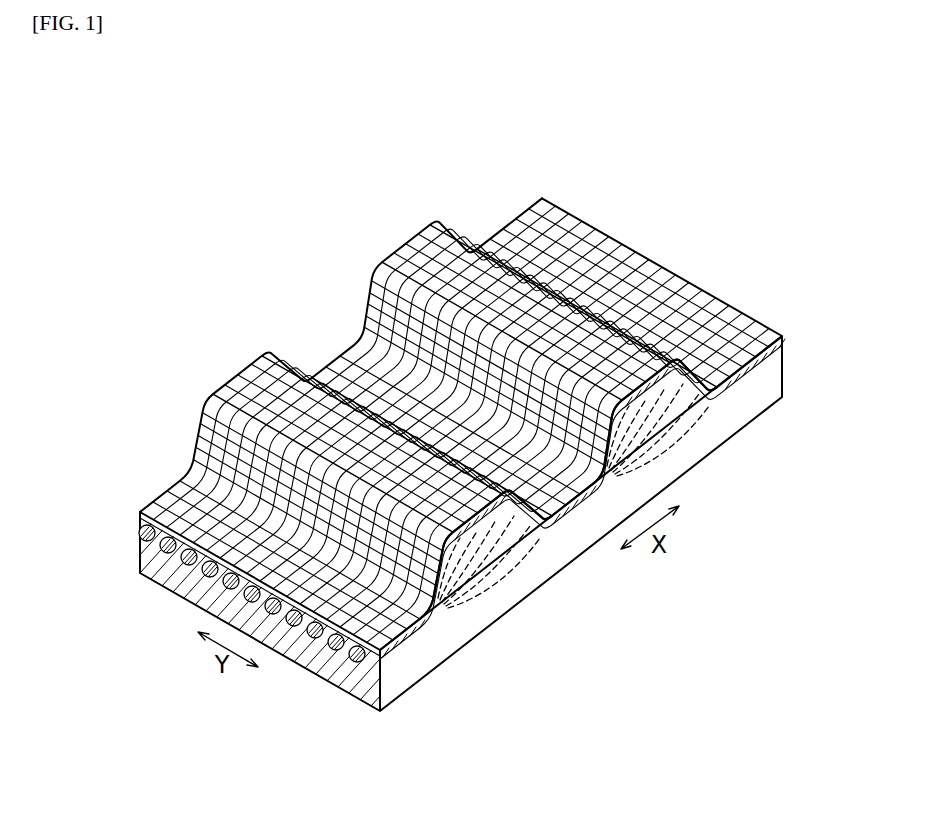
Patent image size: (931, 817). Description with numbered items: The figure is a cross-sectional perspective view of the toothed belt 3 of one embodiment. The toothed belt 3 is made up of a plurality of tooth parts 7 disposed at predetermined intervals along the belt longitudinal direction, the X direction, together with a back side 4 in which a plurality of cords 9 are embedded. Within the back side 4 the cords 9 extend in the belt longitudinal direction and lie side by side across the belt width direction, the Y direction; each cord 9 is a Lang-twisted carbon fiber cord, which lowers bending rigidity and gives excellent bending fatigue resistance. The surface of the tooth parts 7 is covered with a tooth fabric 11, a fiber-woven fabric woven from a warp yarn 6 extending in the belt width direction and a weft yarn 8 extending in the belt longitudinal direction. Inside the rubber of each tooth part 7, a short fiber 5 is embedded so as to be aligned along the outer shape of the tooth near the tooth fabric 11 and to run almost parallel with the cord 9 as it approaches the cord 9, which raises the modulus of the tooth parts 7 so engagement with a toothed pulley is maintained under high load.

The toothed belt 3 is at (607, 212).
The back side 4 is at (328, 665).
The short fiber 5 is at (688, 432).
The warp yarn 6 is at (287, 368).
The tooth part 7 is at (505, 537).
The weft yarn 8 is at (248, 377).
The cord 9 is at (440, 607).
The tooth fabric 11 is at (182, 468).